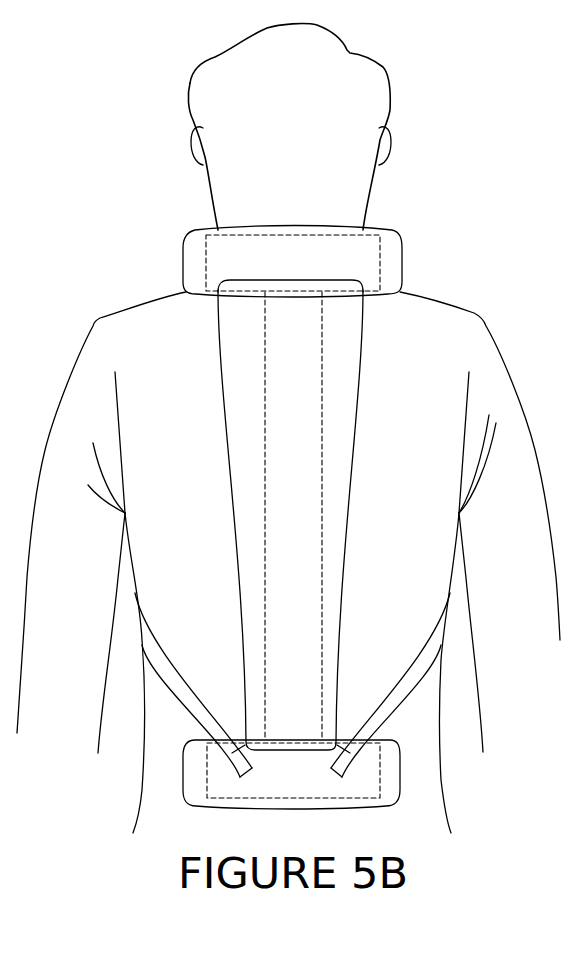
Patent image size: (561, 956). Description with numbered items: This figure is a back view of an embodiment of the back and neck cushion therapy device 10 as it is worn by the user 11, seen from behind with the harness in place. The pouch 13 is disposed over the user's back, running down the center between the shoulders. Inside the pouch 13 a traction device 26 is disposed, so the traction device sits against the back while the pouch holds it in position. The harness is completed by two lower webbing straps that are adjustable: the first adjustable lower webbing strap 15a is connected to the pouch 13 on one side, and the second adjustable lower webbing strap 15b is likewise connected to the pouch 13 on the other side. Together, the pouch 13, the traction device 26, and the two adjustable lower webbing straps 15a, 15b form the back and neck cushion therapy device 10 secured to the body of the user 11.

The back and neck cushion therapy device 10 is at (193, 213).
The user 11 is at (380, 91).
The pouch 13 is at (240, 373).
The traction device 26 is at (310, 387).
The first adjustable lower webbing strap 15a is at (417, 667).
The second adjustable lower webbing strap 15b is at (165, 667).